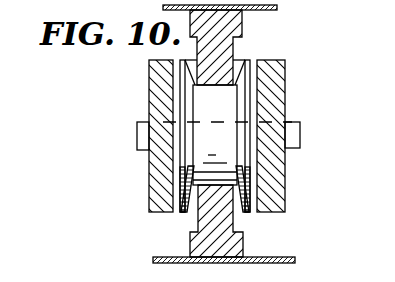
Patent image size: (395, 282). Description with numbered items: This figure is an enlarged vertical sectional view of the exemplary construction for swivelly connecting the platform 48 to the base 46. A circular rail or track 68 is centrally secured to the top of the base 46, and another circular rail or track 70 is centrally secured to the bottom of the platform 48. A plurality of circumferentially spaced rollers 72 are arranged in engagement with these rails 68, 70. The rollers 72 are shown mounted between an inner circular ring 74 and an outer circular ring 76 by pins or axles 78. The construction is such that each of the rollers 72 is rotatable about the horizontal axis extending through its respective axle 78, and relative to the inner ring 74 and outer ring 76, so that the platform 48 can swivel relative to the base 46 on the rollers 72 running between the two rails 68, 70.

The base 46 is at (278, 263).
The platform 48 is at (277, 7).
The circular rail or track 68 is at (218, 240).
The circular rail or track 70 is at (222, 47).
The rollers 72 is at (220, 138).
The inner circular ring 74 is at (270, 197).
The outer circular ring 76 is at (152, 195).
The pins or axles 78 is at (300, 141).